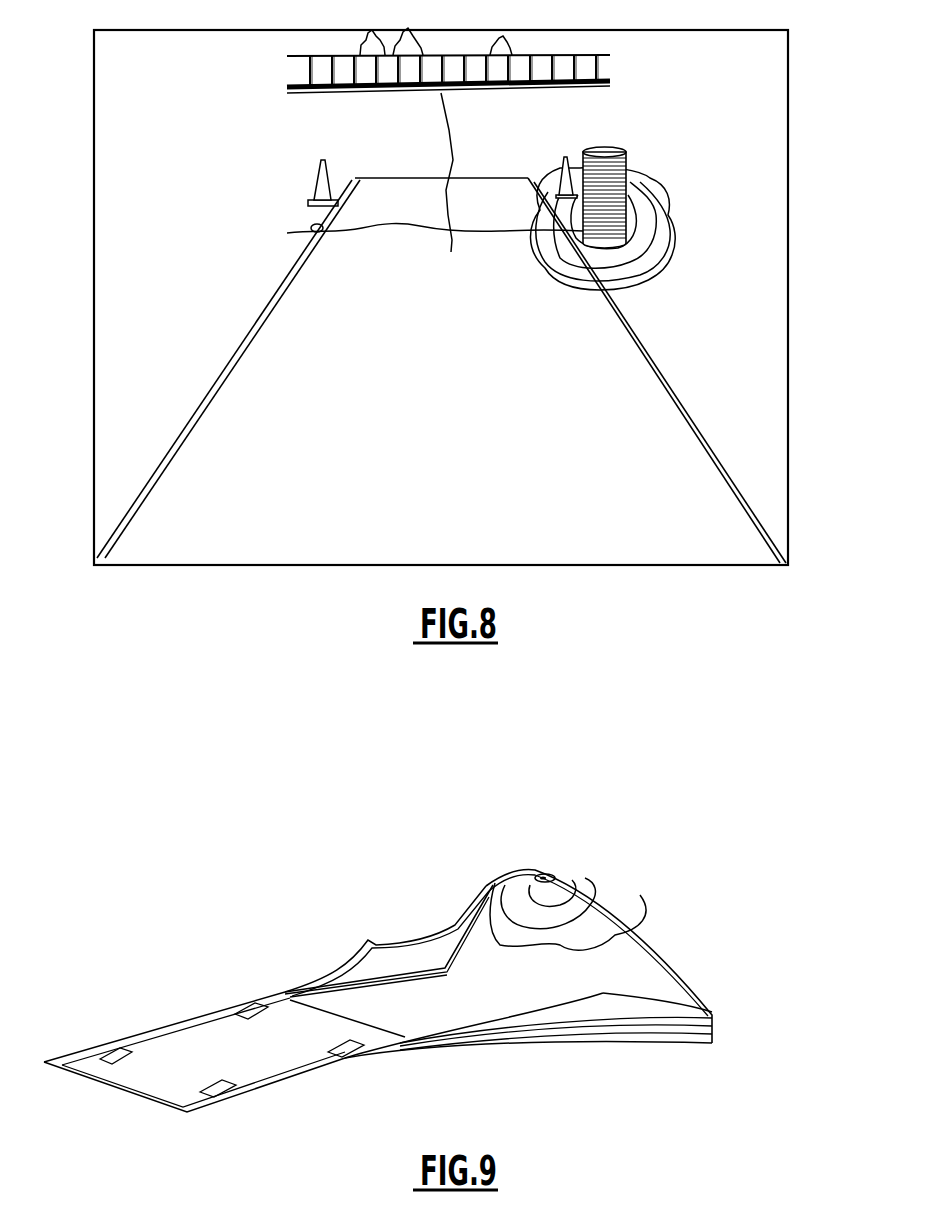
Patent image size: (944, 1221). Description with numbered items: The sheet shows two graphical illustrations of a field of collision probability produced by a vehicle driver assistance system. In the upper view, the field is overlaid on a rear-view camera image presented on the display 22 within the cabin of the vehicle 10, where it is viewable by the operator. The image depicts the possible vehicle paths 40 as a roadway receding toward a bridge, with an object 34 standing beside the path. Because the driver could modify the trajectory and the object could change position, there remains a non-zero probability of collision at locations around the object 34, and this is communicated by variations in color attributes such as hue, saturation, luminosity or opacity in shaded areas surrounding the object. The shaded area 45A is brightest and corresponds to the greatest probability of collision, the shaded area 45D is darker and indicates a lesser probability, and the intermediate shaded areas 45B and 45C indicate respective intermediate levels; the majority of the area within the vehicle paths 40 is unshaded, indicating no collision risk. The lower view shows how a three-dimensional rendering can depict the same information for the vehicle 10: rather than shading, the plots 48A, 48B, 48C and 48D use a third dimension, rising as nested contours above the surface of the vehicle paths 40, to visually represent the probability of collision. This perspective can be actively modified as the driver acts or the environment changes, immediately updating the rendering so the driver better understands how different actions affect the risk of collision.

In FIG. 8, the display 22 is at (789, 92).
In FIG. 8, the object 34 is at (612, 170).
In FIG. 8, the possible vehicle paths 40 is at (694, 419).
In FIG. 9, the possible vehicle paths 40 is at (432, 1066).
In FIG. 8, the shaded area 45A is at (578, 230).
In FIG. 8, the shaded area 45B is at (635, 252).
In FIG. 8, the shaded area 45C is at (637, 258).
In FIG. 8, the shaded area 45D is at (640, 272).
In FIG. 9, the vehicle 10 is at (265, 1062).
In FIG. 9, the plot 48A is at (547, 877).
In FIG. 9, the plot 48B is at (560, 892).
In FIG. 9, the plot 48C is at (573, 908).
In FIG. 9, the plot 48D is at (590, 923).